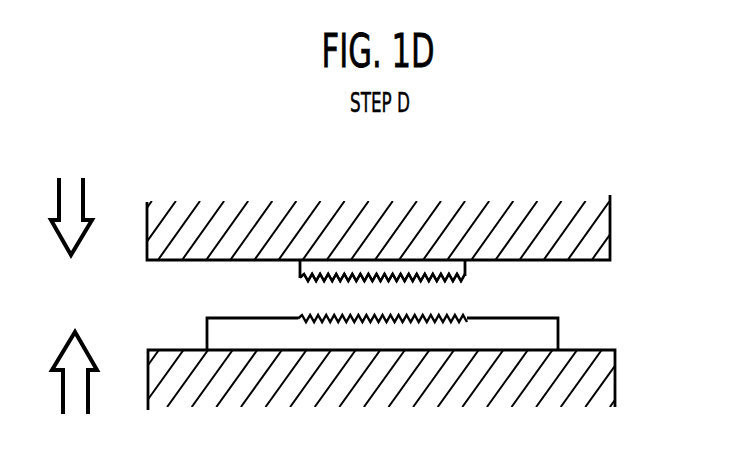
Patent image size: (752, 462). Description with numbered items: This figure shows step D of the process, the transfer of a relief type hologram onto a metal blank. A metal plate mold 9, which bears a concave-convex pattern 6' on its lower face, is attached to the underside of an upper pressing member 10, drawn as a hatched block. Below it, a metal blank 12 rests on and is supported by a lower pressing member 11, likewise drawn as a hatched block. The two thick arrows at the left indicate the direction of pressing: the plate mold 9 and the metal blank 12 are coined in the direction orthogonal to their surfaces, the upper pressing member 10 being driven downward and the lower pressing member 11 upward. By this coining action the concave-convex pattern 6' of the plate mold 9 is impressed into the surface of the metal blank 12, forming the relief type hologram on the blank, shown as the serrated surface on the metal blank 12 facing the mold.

The upper pressing member 10 is at (603, 222).
The lower pressing member 11 is at (607, 384).
The metal blank 12 is at (553, 332).
The metal plate mold 9 is at (465, 267).
The concave-convex pattern 6' is at (405, 292).